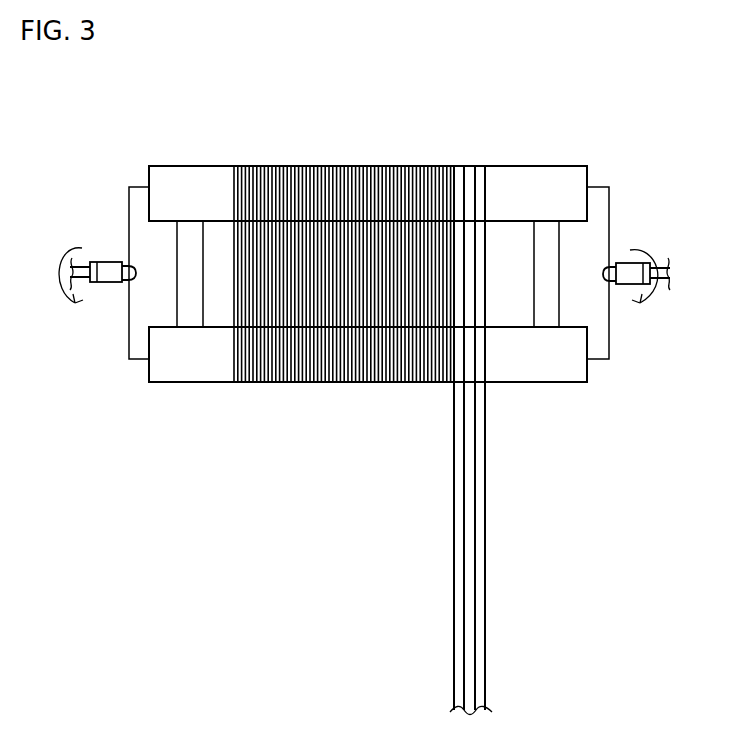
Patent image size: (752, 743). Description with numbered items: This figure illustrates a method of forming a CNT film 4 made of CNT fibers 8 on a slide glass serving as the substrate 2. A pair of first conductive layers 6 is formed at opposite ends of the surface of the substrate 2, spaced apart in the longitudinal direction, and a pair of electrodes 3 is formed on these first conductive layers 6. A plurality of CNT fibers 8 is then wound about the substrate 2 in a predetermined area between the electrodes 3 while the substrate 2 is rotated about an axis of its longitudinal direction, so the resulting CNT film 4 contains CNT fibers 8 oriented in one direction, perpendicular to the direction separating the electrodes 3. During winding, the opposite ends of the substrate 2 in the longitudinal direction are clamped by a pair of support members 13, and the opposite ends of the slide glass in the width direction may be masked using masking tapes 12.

The substrate 2 is at (140, 328).
The electrodes 3 is at (220, 243).
The CNT film 4 is at (342, 188).
The first conductive layers 6 is at (188, 243).
The CNT fibers 8 is at (488, 562).
The masking tapes 12 is at (196, 367).
The adjustment knob 13 is at (110, 270).